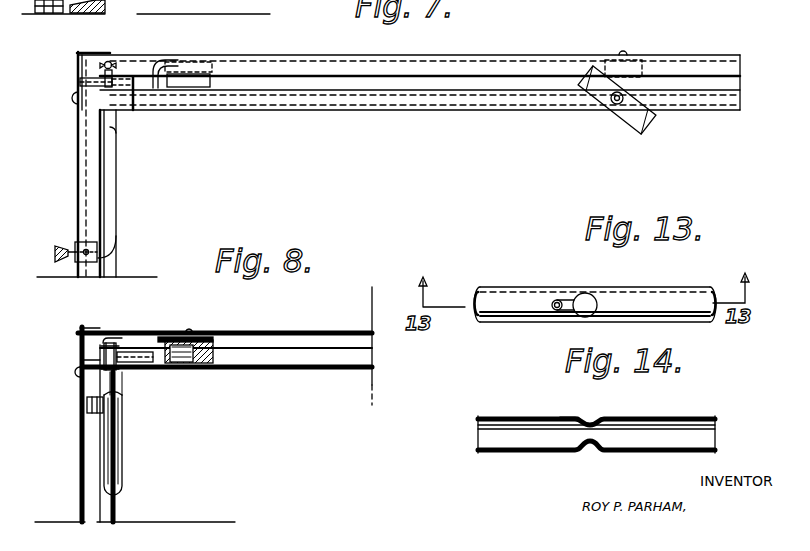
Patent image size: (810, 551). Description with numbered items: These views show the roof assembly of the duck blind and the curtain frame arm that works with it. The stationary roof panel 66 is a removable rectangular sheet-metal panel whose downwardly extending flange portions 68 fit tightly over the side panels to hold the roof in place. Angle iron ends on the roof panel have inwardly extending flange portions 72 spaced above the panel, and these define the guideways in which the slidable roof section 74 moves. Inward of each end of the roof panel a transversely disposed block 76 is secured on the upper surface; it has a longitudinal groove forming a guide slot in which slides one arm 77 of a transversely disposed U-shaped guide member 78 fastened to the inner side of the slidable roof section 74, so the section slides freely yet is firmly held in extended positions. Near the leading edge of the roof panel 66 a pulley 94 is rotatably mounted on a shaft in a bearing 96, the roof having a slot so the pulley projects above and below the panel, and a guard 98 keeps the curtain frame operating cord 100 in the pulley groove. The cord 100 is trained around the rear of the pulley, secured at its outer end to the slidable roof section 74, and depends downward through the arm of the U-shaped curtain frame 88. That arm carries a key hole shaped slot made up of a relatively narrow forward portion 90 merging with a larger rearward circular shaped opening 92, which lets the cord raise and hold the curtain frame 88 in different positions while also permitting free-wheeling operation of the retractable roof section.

In FIG. 7, the roof panel 66 is at (633, 118).
In FIG. 8, the roof panel 66 is at (307, 367).
In FIG. 7, the flange portions 68 is at (463, 100).
In FIG. 7, the inwardly extending flange portions 72 is at (98, 41).
In FIG. 8, the inwardly extending flange portions 72 is at (92, 327).
In FIG. 7, the slidable roof section 74 is at (541, 55).
In FIG. 8, the slidable roof section 74 is at (310, 318).
In FIG. 7, the block 76 is at (212, 75).
In FIG. 8, the block 76 is at (222, 367).
In FIG. 8, the arm 77 is at (180, 357).
In FIG. 7, the U-shaped guide member 78 is at (160, 72).
In FIG. 8, the U-shaped guide member 78 is at (218, 334).
In FIG. 7, the curtain frame 88 is at (73, 246).
In FIG. 8, the curtain frame 88 is at (123, 450).
In FIG. 13, the curtain frame 88 is at (507, 317).
In FIG. 14, the curtain frame 88 is at (527, 453).
In FIG. 13, the narrow forward portion of key hole slot 90 is at (565, 299).
In FIG. 14, the narrow forward portion of key hole slot 90 is at (570, 404).
In FIG. 13, the circular shaped opening 92 is at (591, 296).
In FIG. 14, the circular shaped opening 92 is at (593, 419).
In FIG. 7, the pulley 94 is at (110, 82).
In FIG. 8, the pulley 94 is at (97, 375).
In FIG. 7, the bearing 96 is at (135, 108).
In FIG. 8, the bearing 96 is at (160, 330).
In FIG. 7, the guard 98 is at (123, 60).
In FIG. 8, the guard 98 is at (123, 336).
In FIG. 7, the curtain frame operating cord 100 is at (117, 155).
In FIG. 8, the curtain frame operating cord 100 is at (123, 500).
In FIG. 13, the curtain frame operating cord 100 is at (553, 301).